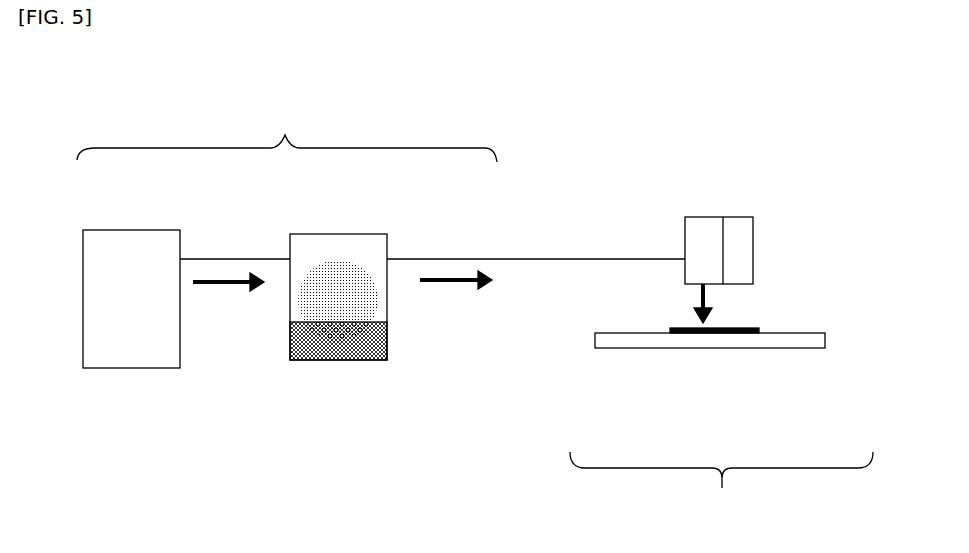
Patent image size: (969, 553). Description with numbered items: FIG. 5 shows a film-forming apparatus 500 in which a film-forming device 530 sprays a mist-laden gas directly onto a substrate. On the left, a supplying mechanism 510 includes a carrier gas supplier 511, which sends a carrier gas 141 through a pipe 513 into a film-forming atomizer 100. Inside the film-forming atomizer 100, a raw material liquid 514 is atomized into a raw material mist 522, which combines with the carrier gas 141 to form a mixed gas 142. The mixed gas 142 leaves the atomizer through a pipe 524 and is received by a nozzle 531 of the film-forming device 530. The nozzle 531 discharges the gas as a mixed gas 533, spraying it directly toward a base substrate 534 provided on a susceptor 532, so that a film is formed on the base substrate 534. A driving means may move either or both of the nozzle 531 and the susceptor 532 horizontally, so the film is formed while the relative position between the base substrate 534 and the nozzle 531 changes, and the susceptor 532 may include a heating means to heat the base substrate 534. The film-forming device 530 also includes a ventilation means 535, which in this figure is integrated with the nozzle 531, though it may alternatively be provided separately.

The film-forming apparatus 500 is at (72, 97).
The supplying mechanism 510 is at (287, 135).
The carrier gas supplier 511 is at (123, 253).
The pipe 513 is at (237, 257).
The raw material liquid 514 is at (307, 345).
The raw material mist 522 is at (350, 317).
The pipe 524 is at (462, 257).
The film-forming atomizer 100 is at (297, 313).
The carrier gas 141 is at (228, 302).
The mixed gas 142 is at (456, 301).
The film-forming device 530 is at (721, 490).
The nozzle 531 is at (703, 223).
The susceptor 532 is at (725, 350).
The mixed gas 533 is at (677, 303).
The base substrate 534 is at (747, 328).
The ventilation means 535 is at (740, 225).